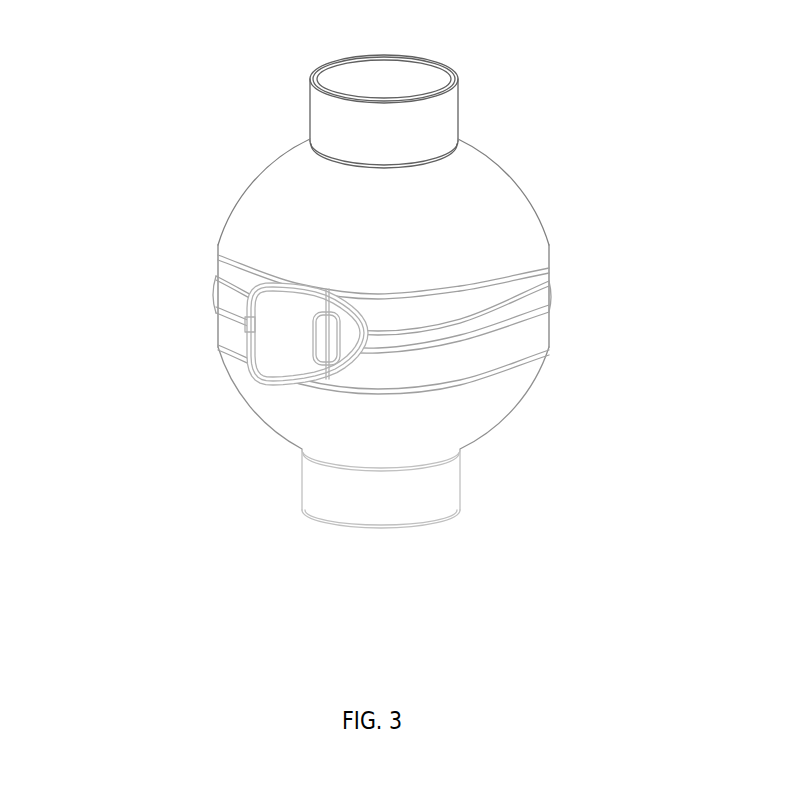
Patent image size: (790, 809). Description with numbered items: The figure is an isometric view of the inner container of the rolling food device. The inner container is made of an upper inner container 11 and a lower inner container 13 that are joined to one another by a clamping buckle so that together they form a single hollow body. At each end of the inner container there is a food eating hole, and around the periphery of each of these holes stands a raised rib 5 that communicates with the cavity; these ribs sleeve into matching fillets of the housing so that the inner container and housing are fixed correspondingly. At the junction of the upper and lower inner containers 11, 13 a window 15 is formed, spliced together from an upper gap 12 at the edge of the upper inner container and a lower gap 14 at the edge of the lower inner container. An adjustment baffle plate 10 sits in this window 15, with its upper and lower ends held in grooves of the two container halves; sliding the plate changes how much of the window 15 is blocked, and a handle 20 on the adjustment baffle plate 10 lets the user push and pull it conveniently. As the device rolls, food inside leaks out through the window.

The raised rib 5 is at (340, 118).
The adjustment baffle plate 10 is at (280, 327).
The upper inner container 11 is at (260, 207).
The upper gap 12 is at (343, 317).
The lower inner container 13 is at (317, 420).
The lower gap 14 is at (343, 365).
The window 15 is at (347, 342).
The handle 20 is at (320, 312).